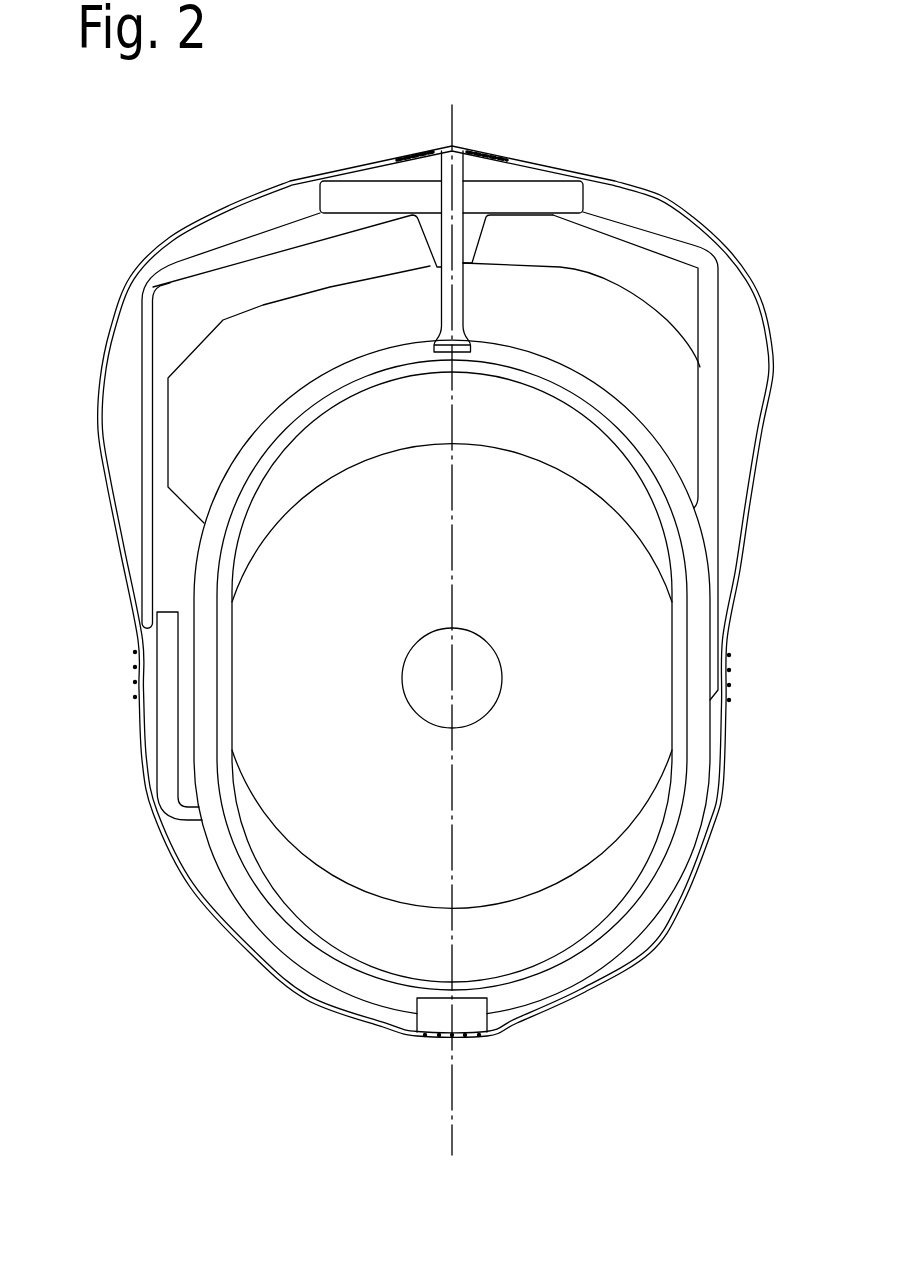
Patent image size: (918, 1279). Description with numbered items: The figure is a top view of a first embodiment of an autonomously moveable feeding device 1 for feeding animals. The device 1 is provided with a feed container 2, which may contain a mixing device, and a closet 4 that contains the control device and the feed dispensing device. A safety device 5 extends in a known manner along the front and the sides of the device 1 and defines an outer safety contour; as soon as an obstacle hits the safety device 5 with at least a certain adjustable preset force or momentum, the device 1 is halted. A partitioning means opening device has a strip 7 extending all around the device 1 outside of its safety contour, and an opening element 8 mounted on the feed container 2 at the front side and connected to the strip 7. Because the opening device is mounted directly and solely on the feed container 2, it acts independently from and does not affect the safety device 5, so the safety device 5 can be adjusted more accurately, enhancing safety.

The autonomously moveable feeding device 1 is at (621, 144).
The feed container 2 is at (405, 880).
The closet 4 is at (208, 414).
The safety device 5 is at (553, 200).
The strip 7 is at (137, 720).
The opening element 8 is at (456, 178).